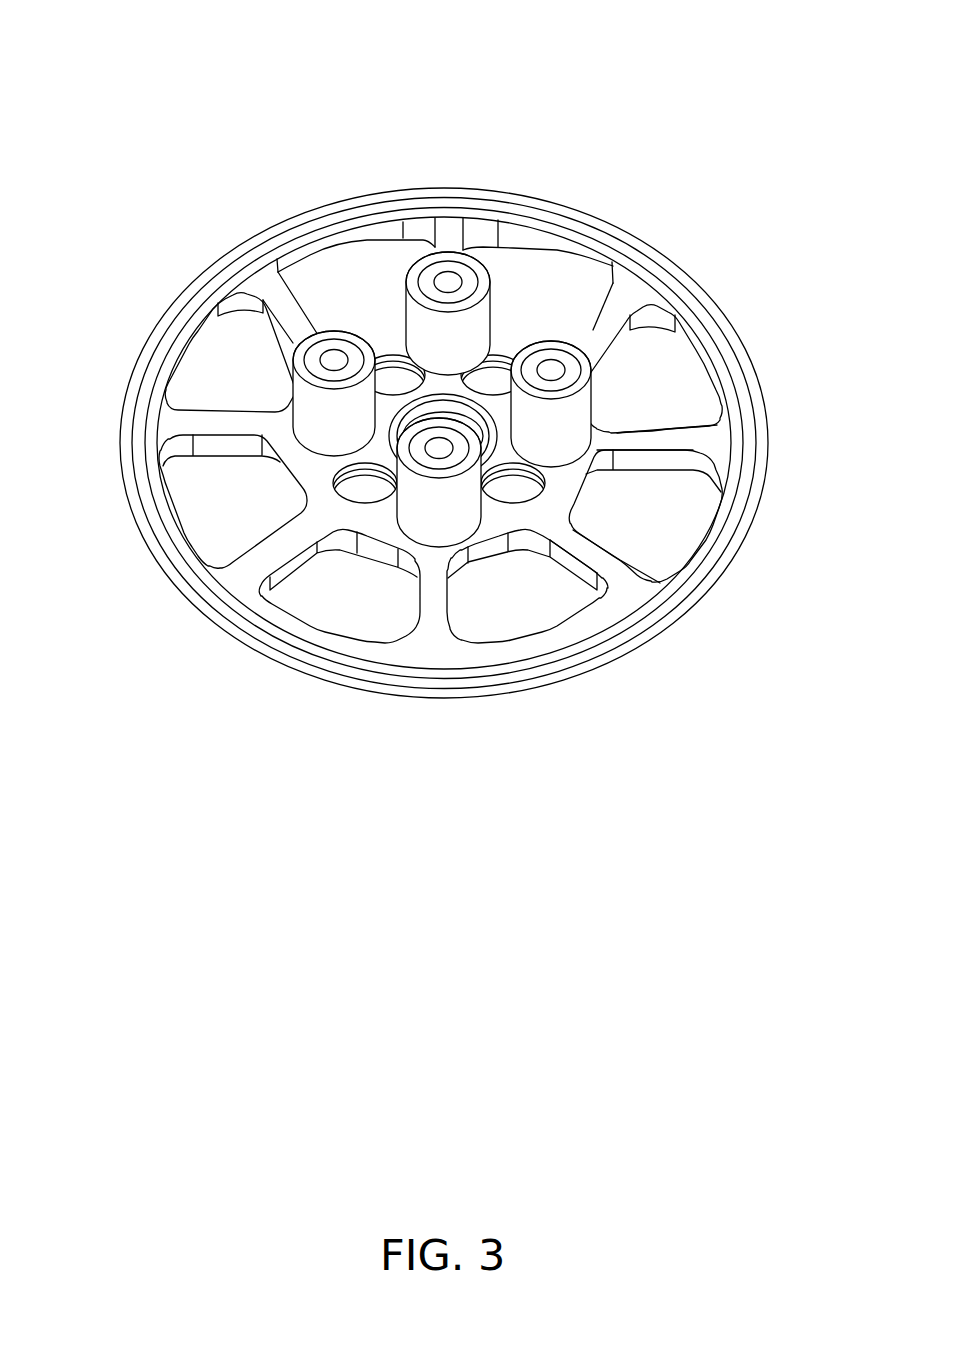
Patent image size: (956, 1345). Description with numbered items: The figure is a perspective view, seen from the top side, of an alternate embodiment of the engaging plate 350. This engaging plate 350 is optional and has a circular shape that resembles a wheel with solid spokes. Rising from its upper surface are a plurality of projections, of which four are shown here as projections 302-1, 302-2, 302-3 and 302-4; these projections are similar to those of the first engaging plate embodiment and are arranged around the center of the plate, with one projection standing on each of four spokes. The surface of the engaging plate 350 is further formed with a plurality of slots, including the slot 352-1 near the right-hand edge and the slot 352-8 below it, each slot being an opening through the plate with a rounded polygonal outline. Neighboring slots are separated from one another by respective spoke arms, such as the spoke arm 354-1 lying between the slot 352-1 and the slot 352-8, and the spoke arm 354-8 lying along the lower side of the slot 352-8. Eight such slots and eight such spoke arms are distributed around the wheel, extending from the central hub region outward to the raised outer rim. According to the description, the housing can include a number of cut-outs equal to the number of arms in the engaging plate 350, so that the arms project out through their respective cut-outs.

The engaging plate 350 is at (113, 41).
The projection 302-1 is at (553, 356).
The projection 302-2 is at (453, 265).
The projection 302-3 is at (318, 345).
The projection 302-4 is at (434, 478).
The slot 352-1 is at (676, 376).
The slot 352-8 is at (683, 523).
The spoke arm 354-1 is at (700, 440).
The spoke arm 354-8 is at (622, 583).